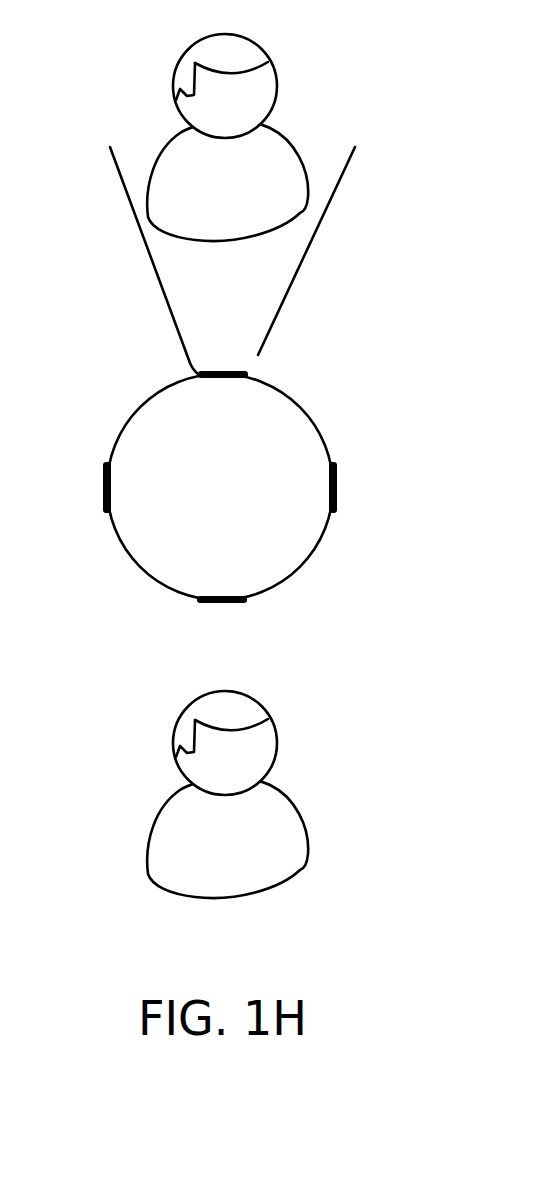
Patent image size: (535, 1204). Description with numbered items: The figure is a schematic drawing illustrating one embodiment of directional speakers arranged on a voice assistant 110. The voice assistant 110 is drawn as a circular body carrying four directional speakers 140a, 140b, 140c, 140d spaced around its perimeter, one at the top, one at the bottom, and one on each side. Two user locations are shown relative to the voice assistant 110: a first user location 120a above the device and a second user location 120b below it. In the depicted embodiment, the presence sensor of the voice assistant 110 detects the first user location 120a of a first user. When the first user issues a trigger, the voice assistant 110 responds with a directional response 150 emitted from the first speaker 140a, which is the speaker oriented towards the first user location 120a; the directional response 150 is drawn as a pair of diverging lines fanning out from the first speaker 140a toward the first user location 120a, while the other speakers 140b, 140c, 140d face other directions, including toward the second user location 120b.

The voice assistant 110 is at (240, 513).
The first user location 120a is at (147, 216).
The user location 120b is at (147, 872).
The first speaker 140a is at (197, 372).
The directional speaker 140b is at (107, 513).
The directional speaker 140c is at (207, 600).
The directional speaker 140d is at (330, 513).
The directional response 150 is at (158, 285).